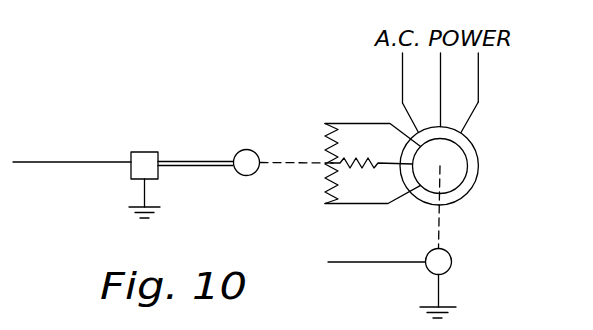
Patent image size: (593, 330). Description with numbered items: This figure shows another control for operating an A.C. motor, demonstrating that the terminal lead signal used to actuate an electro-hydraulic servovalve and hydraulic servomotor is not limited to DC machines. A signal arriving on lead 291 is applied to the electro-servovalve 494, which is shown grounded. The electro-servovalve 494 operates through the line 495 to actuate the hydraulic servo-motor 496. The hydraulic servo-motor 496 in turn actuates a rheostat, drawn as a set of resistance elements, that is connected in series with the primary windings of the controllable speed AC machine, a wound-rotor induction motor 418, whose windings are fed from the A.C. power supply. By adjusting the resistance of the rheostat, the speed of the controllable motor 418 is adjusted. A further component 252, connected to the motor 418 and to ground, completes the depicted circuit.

The input conductor 291 is at (62, 161).
The electro-servovalve 494 is at (141, 151).
The line 495 is at (200, 167).
The hydraulic servo-motor 496 is at (247, 149).
The wound-rotor induction motor 418 is at (479, 167).
The switch 252 is at (452, 262).